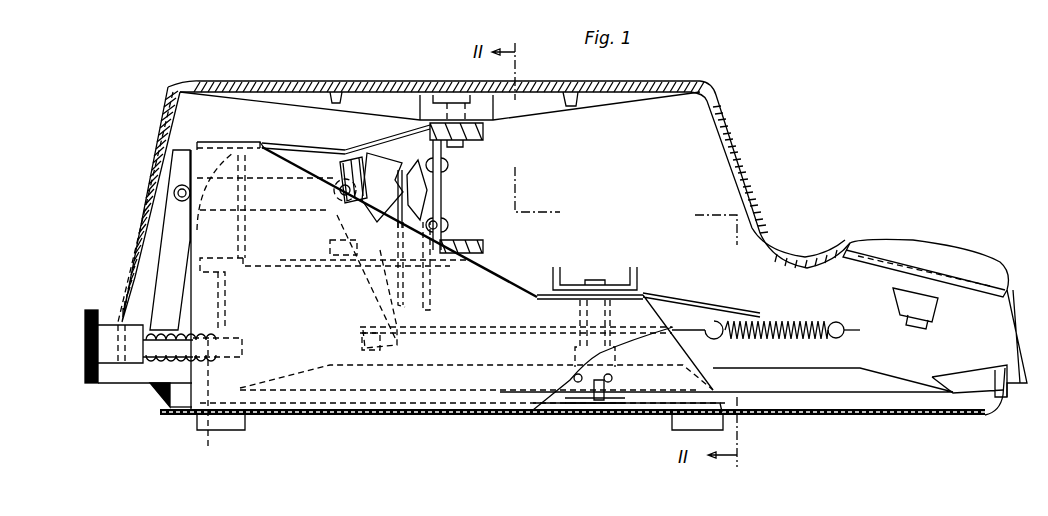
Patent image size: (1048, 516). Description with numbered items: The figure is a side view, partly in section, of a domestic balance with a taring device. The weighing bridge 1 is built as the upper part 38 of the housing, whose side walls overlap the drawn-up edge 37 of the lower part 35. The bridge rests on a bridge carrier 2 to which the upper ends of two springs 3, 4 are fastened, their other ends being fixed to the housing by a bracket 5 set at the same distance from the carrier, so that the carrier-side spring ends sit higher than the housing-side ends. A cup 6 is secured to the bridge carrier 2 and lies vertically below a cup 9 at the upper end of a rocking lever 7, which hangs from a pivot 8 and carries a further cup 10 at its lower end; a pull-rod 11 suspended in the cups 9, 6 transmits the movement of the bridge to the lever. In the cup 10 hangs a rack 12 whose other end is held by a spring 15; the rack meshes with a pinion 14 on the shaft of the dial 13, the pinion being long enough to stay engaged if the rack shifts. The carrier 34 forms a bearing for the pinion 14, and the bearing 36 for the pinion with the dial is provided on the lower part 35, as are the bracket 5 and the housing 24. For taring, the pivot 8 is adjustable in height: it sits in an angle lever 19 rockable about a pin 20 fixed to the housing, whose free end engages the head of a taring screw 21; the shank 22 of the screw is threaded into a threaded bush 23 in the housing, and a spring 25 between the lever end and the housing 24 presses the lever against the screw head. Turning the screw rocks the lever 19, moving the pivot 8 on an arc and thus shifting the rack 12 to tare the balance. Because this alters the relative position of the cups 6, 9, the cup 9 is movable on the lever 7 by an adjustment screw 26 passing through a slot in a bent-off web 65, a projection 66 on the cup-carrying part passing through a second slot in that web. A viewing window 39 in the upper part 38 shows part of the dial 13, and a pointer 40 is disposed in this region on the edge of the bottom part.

The weighing bridge 1 is at (452, 106).
The bridge carrier 2 is at (443, 195).
The spring 3 is at (385, 135).
The spring 4 is at (302, 268).
The bracket 5 is at (263, 144).
The cup 6 is at (435, 298).
The rocking lever 7 is at (345, 290).
The pivot 8 is at (334, 198).
The cup 9 is at (386, 164).
The cup 10 is at (362, 342).
The pull-rod 11 is at (455, 241).
The rack 12 is at (474, 334).
The dial 13 is at (848, 395).
The pinion 14 is at (648, 292).
The spring 15 is at (800, 318).
The angle lever 19 is at (172, 231).
The pin 20 is at (182, 193).
The taring screw 21 is at (112, 328).
The shank 22 is at (198, 418).
The threaded bush 23 is at (222, 336).
The housing 24 is at (210, 406).
The spring 25 is at (152, 390).
The adjustment screw 26 is at (445, 224).
The carrier 34 is at (585, 287).
The lower part 35 is at (347, 416).
The bearing 36 is at (583, 402).
The drawn-up edge 37 is at (160, 402).
The upper part 38 is at (735, 130).
The viewing window 39 is at (912, 252).
The pointer 40 is at (945, 400).
The bent-off web 65 is at (340, 256).
The projection 66 is at (302, 147).